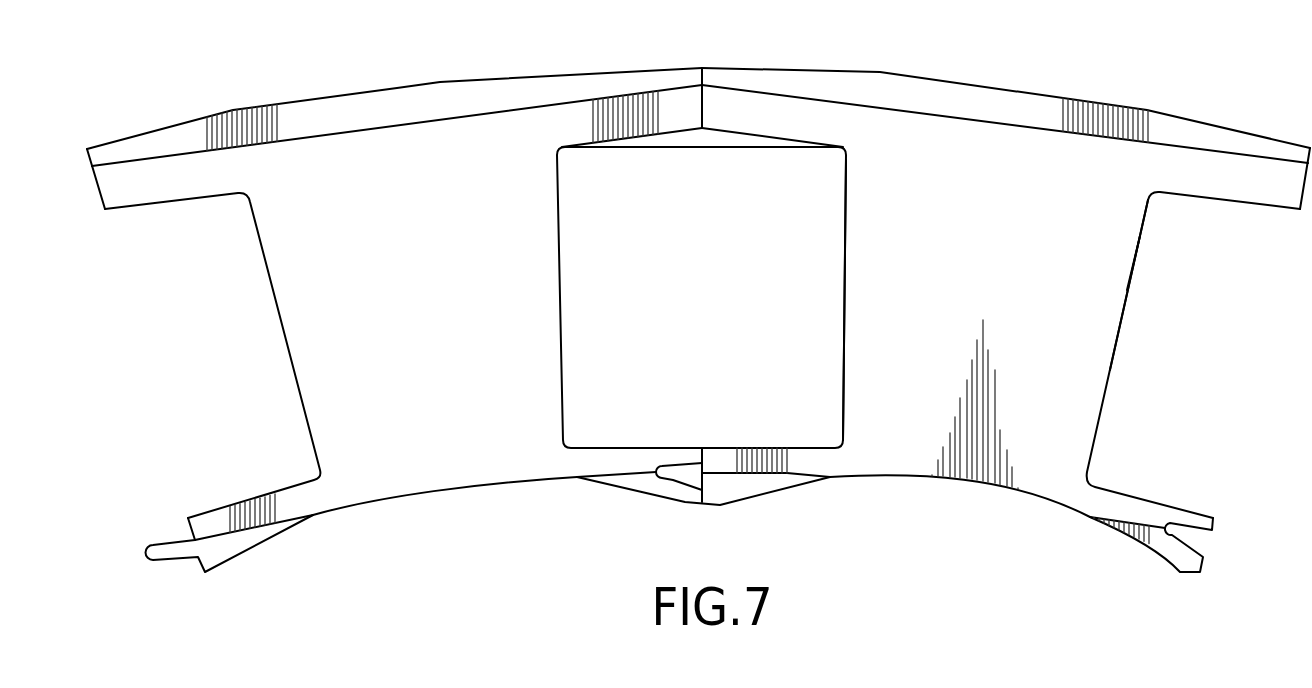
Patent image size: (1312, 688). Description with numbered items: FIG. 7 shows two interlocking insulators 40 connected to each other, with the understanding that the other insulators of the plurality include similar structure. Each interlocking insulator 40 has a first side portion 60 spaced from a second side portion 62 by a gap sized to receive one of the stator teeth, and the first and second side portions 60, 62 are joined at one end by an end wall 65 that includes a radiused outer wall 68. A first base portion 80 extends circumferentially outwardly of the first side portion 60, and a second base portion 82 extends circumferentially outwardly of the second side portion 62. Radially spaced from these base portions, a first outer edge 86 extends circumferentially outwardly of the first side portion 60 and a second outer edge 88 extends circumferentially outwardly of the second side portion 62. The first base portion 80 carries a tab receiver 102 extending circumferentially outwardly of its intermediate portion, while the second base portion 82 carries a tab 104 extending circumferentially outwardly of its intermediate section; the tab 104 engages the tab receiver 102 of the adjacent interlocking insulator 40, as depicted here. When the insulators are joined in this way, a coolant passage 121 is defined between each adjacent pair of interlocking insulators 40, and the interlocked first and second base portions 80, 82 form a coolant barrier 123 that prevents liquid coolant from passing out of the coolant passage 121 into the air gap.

The interlocking insulator 40 is at (1147, 350).
The first side portion 60 is at (1119, 393).
The second side portion 62 is at (830, 277).
The end wall 65 is at (955, 274).
The radiused outer wall 68 is at (1000, 103).
The first base portion 80 is at (1151, 482).
The second base portion 82 is at (774, 431).
The first outer edge 86 is at (1212, 177).
The second outer edge 88 is at (752, 113).
The tab receiver 102 is at (665, 479).
The tab 104 is at (695, 475).
The coolant passage 121 is at (675, 320).
The coolant barrier 123 is at (685, 431).